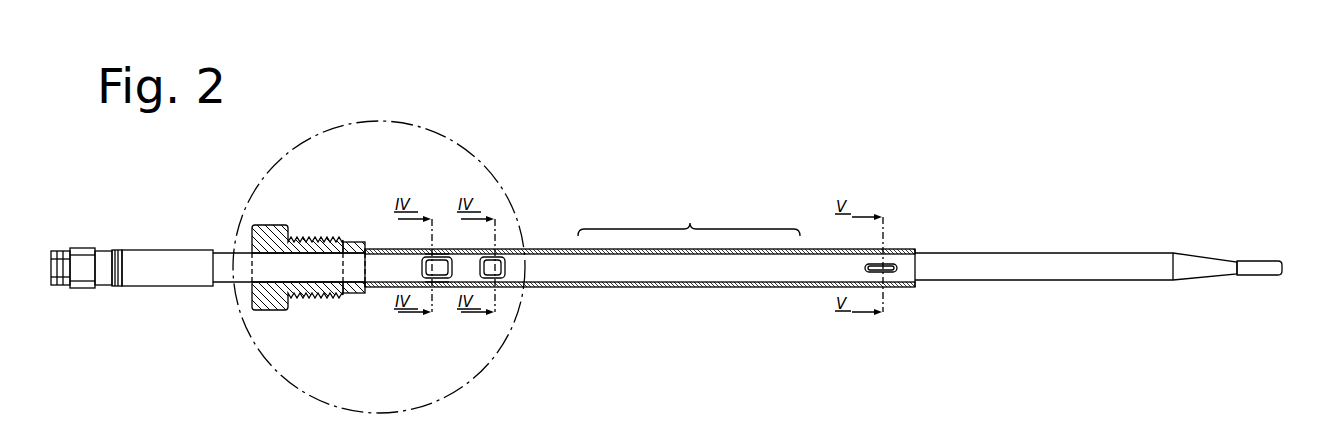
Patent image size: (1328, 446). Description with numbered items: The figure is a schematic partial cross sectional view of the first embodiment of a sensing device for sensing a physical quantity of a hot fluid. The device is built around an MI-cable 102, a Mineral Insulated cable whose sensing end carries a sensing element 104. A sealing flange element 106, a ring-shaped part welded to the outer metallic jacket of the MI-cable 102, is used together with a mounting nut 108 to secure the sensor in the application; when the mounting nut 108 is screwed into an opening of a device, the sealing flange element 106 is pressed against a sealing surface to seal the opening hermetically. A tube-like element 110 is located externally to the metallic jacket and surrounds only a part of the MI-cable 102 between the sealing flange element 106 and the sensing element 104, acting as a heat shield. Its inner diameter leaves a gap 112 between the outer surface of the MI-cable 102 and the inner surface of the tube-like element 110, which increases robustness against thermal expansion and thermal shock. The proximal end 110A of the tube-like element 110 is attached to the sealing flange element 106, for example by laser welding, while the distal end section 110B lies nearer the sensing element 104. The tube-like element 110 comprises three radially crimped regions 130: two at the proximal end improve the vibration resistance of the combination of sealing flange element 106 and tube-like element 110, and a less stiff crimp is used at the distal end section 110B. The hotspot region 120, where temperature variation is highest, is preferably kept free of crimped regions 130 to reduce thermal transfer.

The MI-cable 102 is at (1073, 253).
The sensing element 104 is at (1247, 261).
The sealing flange element 106 is at (352, 241).
The mounting nut 108 is at (262, 226).
The tube-like element 110 is at (666, 289).
The proximal end of the tube-like element 110A is at (368, 292).
The distal end section of the tube-like element 110B is at (907, 240).
The gap 112 is at (83, 242).
The hotspot region 120 is at (689, 216).
The radially crimped regions 130 is at (443, 296).